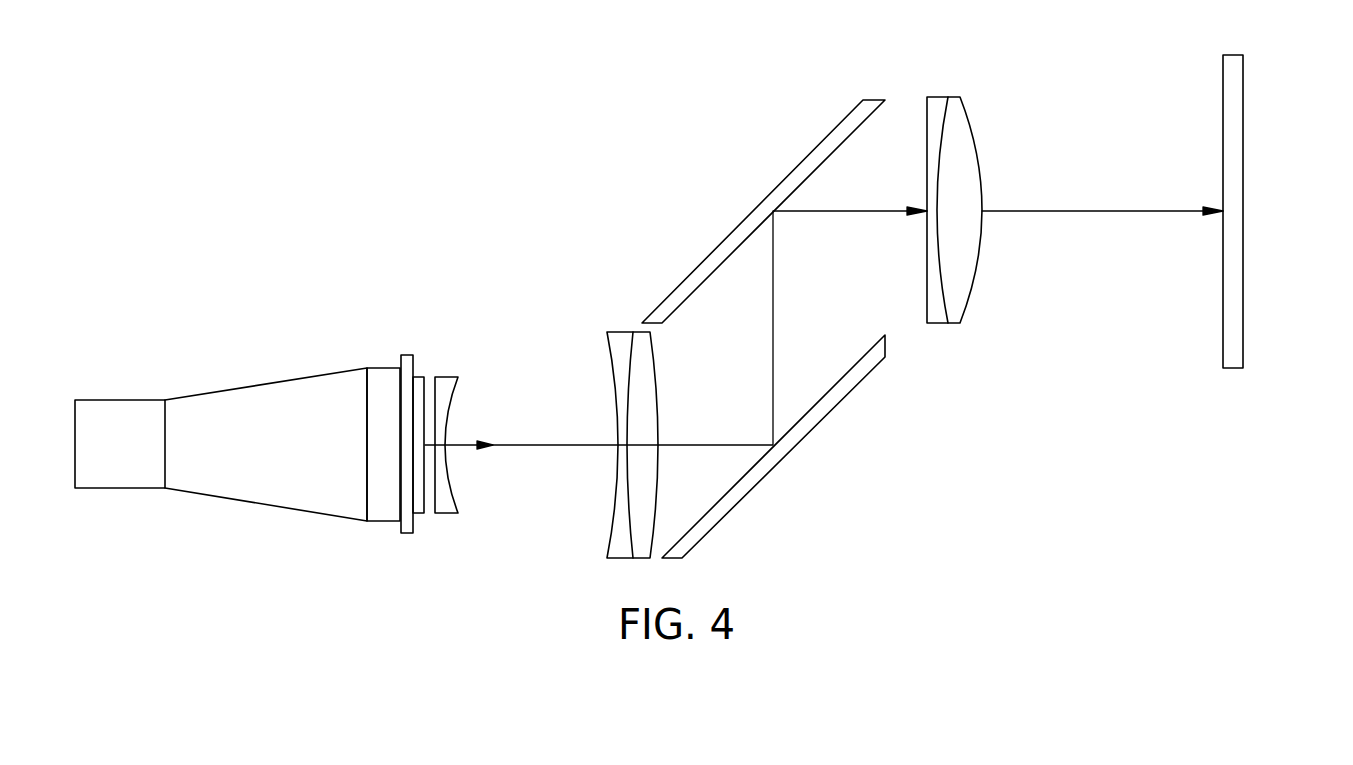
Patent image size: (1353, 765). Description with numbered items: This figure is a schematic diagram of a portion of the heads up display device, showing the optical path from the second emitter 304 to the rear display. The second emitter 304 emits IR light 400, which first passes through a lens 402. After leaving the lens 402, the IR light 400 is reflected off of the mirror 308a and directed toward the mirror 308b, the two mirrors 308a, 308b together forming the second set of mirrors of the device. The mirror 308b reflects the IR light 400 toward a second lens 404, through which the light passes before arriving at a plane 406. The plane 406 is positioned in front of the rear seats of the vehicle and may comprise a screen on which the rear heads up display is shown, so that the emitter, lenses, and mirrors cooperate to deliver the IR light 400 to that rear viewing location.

The second emitter 304 is at (267, 383).
The IR light 400 is at (558, 446).
The lens 402 is at (607, 353).
The mirror 308a is at (783, 458).
The mirror 308b is at (753, 209).
The lens 404 is at (977, 152).
The plane 406 is at (1243, 211).